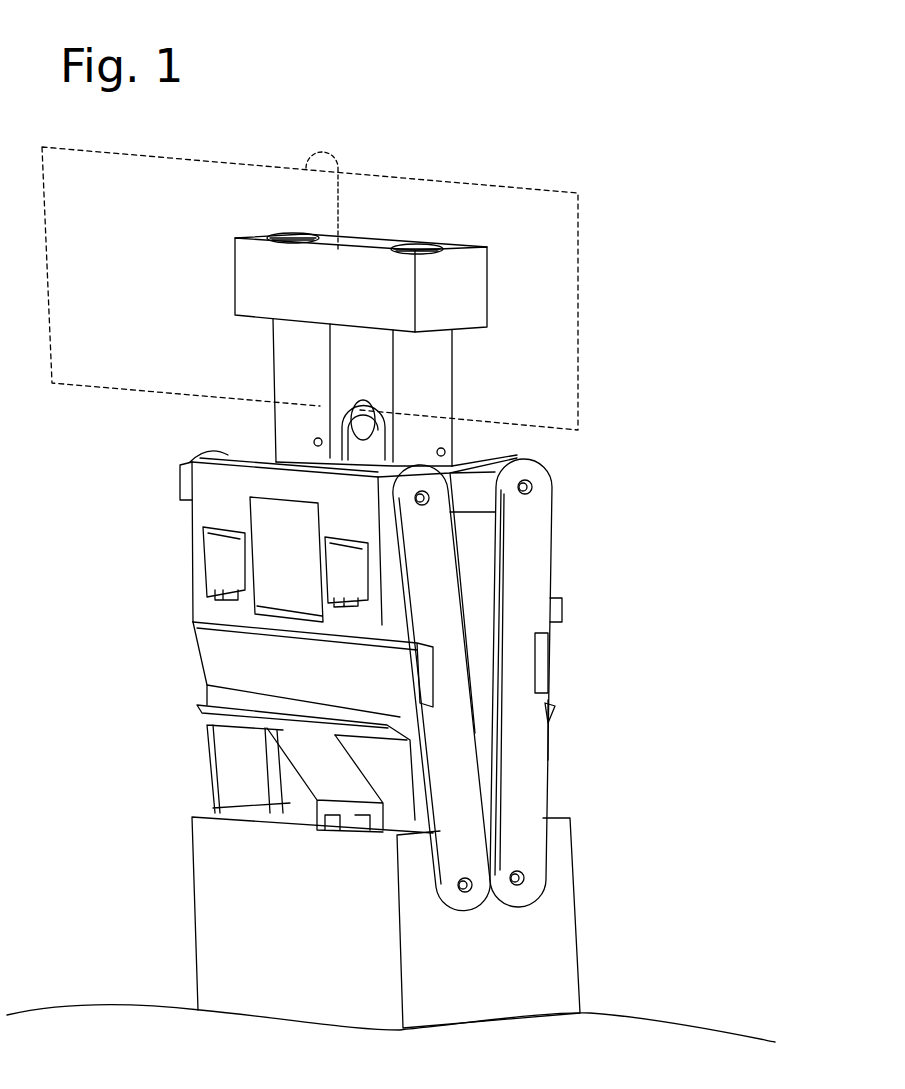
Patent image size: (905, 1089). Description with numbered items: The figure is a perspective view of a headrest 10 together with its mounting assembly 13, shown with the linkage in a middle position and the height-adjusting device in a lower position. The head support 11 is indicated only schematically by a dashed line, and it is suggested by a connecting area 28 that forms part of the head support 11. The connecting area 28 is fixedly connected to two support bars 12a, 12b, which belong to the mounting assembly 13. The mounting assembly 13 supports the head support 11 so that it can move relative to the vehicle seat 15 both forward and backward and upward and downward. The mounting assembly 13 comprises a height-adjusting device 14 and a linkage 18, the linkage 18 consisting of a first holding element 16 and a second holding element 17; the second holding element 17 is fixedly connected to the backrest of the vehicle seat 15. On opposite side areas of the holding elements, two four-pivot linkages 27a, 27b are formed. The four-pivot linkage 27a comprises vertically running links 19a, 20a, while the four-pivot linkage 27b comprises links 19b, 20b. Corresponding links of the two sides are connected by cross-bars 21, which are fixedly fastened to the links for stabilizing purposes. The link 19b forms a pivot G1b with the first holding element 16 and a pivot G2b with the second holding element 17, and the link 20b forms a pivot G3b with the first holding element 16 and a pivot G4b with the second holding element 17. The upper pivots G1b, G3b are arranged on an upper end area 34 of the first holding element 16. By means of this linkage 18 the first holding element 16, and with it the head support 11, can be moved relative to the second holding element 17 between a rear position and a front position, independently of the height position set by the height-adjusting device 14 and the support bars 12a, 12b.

The headrest 10 is at (668, 134).
The head support 11 is at (433, 181).
The connecting area 28 is at (457, 292).
The support bar 12a is at (297, 382).
The support bar 12b is at (435, 397).
The height-adjusting device 14 is at (258, 447).
The first holding element 16 is at (479, 458).
The upper end area 34 is at (471, 494).
The mounting assembly 13 is at (178, 557).
The four-pivot linkage 27a is at (188, 630).
The four-pivot linkage 27b is at (546, 760).
The cross-bar 21 is at (220, 653).
The link 19a is at (233, 750).
The link 20a is at (270, 780).
The link 19b is at (430, 602).
The link 20b is at (530, 579).
The linkage 18 is at (184, 454).
The pivot G1b is at (415, 499).
The pivot G2b is at (440, 898).
The pivot G3b is at (542, 488).
The pivot G4b is at (527, 878).
The second holding element 17 is at (205, 908).
The vehicle seat 15 is at (648, 1018).